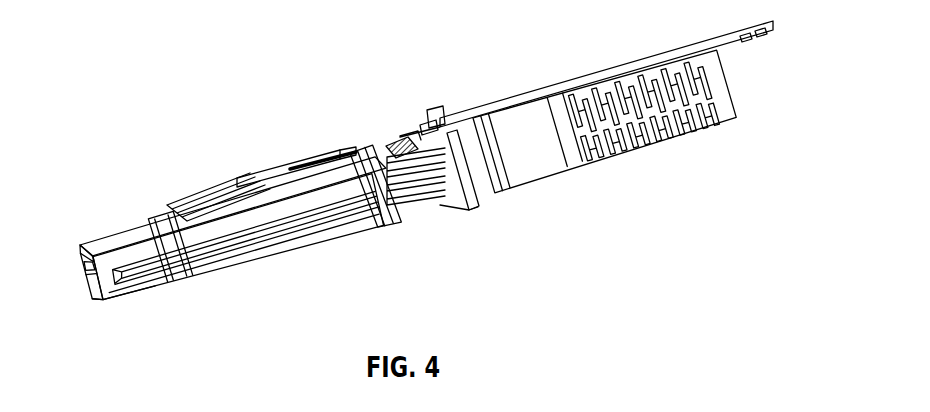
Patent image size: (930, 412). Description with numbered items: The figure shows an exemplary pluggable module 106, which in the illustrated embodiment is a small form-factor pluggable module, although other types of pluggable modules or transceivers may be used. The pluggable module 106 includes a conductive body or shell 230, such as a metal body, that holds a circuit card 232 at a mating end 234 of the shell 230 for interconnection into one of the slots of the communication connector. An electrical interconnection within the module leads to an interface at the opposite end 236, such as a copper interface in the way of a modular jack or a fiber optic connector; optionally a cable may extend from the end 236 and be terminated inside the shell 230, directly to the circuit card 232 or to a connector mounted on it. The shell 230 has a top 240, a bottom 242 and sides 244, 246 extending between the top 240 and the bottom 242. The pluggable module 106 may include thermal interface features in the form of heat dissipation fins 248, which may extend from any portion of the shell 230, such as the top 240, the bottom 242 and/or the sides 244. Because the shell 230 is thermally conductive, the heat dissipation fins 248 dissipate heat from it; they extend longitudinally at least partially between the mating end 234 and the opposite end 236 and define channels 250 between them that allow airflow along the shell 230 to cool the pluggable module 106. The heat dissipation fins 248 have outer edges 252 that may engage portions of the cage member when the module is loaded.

The pluggable module 106 is at (156, 203).
The shell 230 is at (213, 250).
The circuit card 232 is at (128, 272).
The mating end 234 is at (80, 262).
The end 236 is at (510, 190).
The top 240 is at (132, 222).
The bottom 242 is at (292, 235).
The side 244 is at (117, 293).
The side 246 is at (85, 286).
The heat dissipation fins 248 is at (320, 155).
The channels 250 is at (335, 148).
The outer edges 252 is at (283, 162).